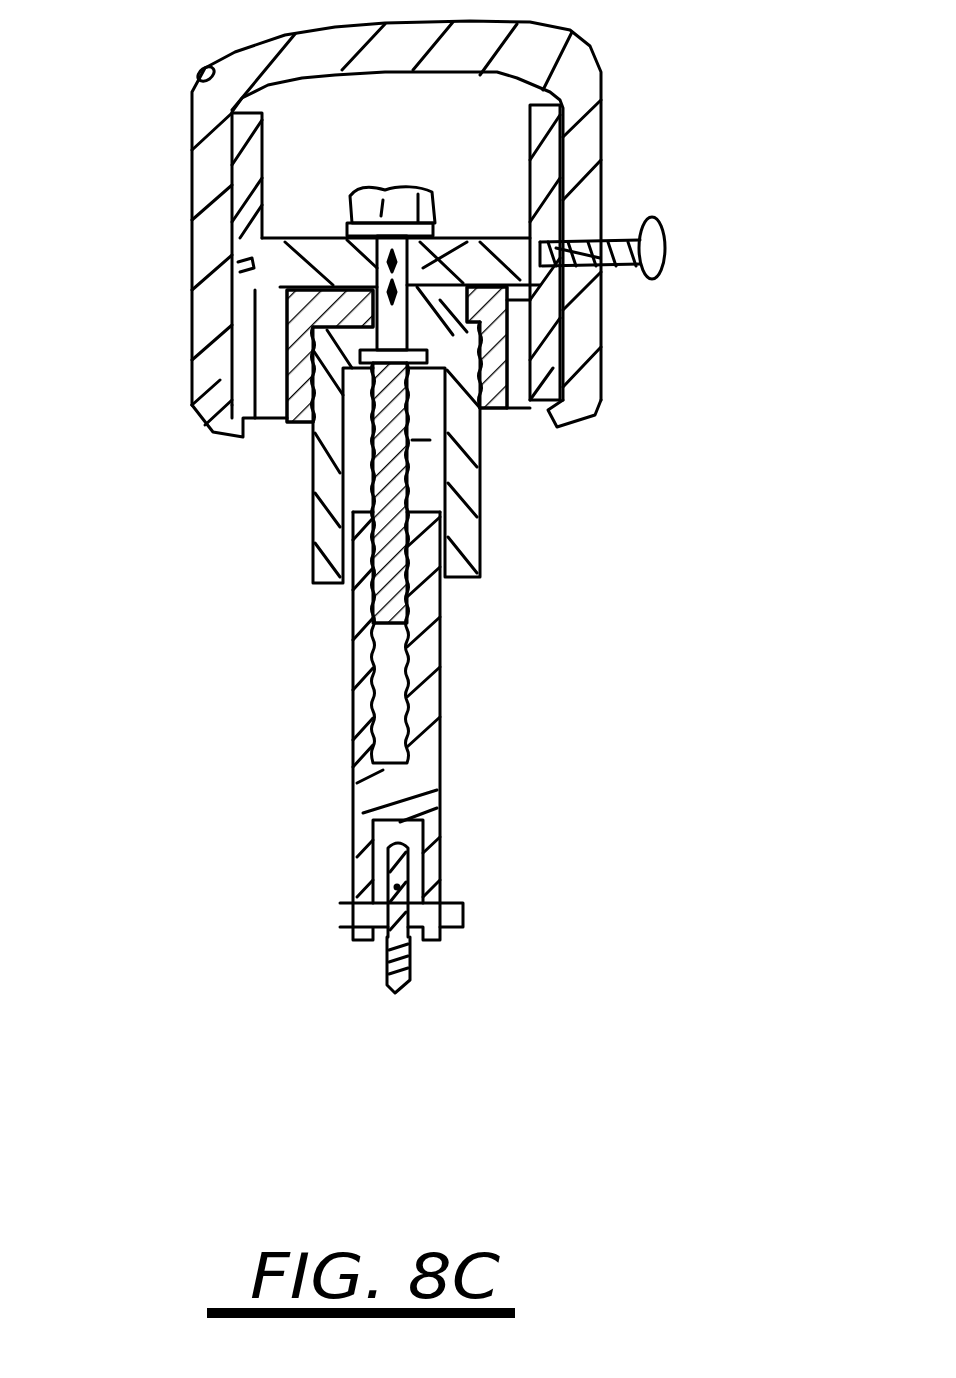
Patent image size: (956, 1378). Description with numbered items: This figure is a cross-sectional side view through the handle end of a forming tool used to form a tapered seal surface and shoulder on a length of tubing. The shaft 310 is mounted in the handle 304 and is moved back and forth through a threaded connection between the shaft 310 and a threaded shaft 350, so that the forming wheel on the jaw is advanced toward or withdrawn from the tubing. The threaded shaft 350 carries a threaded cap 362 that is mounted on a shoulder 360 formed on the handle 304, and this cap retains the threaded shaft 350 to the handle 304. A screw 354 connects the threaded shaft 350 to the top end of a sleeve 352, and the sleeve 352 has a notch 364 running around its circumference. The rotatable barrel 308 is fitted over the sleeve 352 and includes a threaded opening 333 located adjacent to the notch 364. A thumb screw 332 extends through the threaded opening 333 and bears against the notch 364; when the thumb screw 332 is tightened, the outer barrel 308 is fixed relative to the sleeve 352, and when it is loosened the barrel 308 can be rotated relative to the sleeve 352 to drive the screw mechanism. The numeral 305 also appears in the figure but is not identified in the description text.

The rotatable barrel 308 is at (601, 62).
The sleeve 352 is at (548, 226).
The screw 354 is at (406, 127).
The shoulder 360 is at (462, 278).
The thumb screw 332 is at (667, 241).
The threaded opening 333 is at (604, 268).
The notch 364 is at (236, 264).
The threaded cap 362 is at (193, 407).
The tube bore 305 is at (430, 440).
The threaded shaft 350 is at (447, 492).
The handle 304 is at (333, 485).
The shaft 310 is at (447, 718).